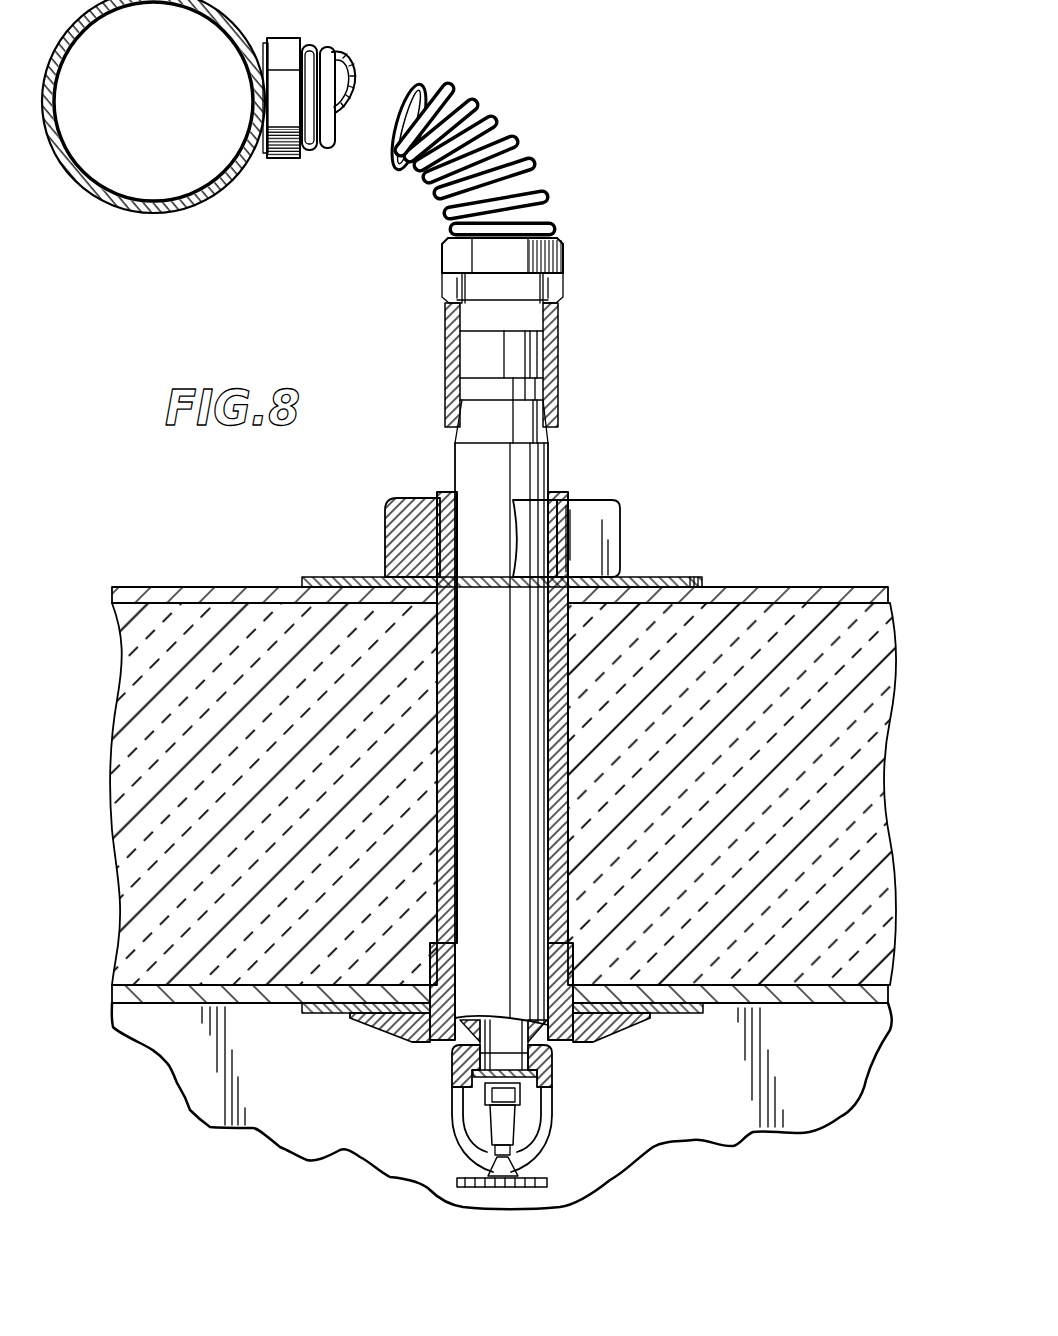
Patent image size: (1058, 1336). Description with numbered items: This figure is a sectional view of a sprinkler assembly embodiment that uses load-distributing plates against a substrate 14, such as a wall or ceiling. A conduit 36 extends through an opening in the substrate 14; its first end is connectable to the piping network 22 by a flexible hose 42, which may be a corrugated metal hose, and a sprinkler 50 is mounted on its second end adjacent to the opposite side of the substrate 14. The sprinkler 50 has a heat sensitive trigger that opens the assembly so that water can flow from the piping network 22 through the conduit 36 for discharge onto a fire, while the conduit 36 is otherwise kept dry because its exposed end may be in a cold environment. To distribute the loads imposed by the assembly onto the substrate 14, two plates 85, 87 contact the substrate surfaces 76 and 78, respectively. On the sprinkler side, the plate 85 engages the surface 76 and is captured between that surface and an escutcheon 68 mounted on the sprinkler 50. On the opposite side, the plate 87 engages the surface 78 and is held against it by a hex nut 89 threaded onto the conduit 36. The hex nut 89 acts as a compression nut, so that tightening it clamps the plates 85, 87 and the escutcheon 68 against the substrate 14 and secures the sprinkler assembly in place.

The substrate 14 is at (264, 791).
The piping network 22 is at (150, 214).
The conduit 36 is at (552, 468).
The flexible hose 42 is at (542, 181).
The sprinkler 50 is at (552, 1063).
The escutcheon 68 is at (383, 1033).
The surface 76 is at (280, 1003).
The surface 78 is at (228, 587).
The plate 85 is at (665, 1013).
The plate 87 is at (658, 578).
The hex nut 89 is at (612, 508).